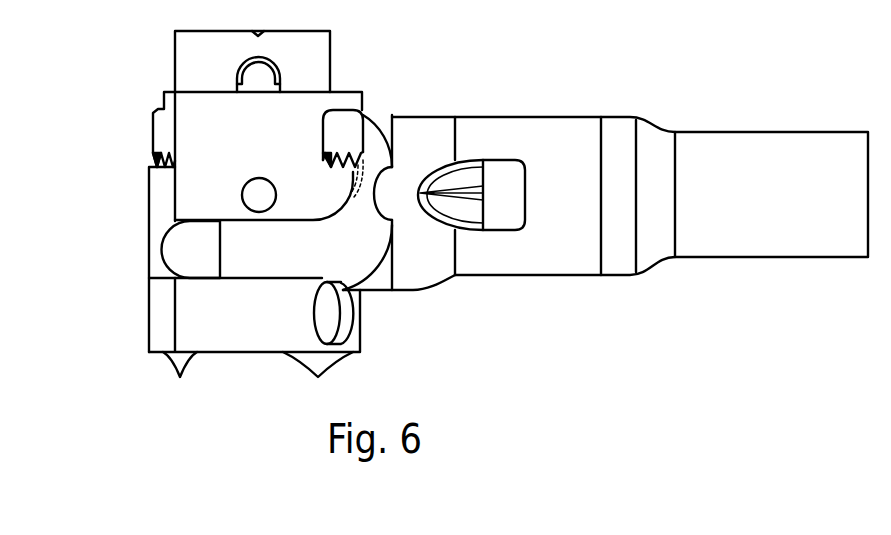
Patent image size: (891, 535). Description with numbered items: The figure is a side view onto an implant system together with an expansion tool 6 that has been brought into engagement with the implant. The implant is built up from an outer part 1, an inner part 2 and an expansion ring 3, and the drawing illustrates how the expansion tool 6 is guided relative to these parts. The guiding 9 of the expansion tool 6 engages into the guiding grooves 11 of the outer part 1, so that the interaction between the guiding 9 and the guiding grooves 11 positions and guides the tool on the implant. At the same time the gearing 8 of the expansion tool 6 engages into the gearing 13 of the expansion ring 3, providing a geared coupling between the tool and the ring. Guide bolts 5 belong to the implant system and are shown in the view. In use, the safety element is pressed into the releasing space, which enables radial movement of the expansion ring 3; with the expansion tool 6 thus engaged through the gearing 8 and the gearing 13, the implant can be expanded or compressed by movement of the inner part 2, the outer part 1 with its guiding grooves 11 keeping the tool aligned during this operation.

The outer part 1 is at (350, 100).
The inner part 2 is at (313, 48).
The expansion ring 3 is at (163, 127).
The guide bolts 5 is at (258, 197).
The expansion tool 6 is at (543, 135).
The gearing of shaft 8 is at (447, 200).
The guiding of expansion tool 9 is at (260, 248).
The guiding groove 11 is at (163, 262).
The gearing expansion ring 13 is at (158, 167).